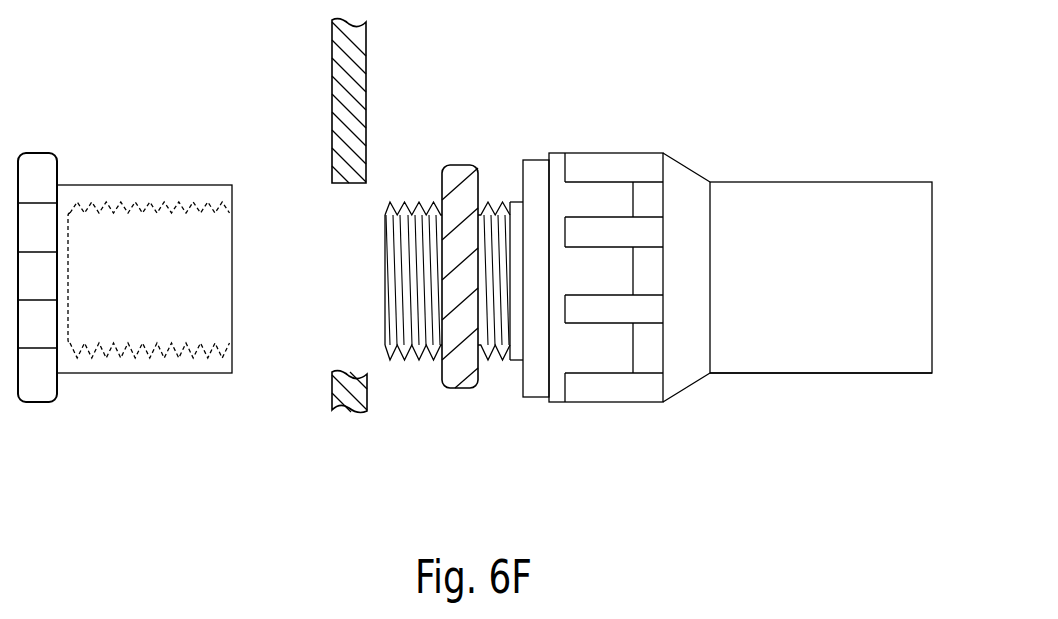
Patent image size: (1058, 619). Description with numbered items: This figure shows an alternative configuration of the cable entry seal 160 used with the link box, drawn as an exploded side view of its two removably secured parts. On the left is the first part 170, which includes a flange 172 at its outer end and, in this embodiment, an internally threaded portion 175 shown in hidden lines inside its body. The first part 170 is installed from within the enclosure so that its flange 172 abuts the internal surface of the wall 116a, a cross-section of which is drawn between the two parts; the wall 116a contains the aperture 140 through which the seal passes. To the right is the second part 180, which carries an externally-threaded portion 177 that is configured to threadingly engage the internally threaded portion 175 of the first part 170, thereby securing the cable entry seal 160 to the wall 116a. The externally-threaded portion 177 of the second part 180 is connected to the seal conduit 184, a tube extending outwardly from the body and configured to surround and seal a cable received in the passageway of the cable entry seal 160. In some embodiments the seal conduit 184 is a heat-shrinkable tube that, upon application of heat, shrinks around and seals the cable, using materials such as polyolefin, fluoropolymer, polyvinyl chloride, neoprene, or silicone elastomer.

The first part 170 is at (74, 132).
The flange 172 is at (35, 402).
The internally threaded portion 175 is at (230, 322).
The aperture 140 is at (333, 184).
The wall 116a is at (368, 42).
The cable entry seal 160 is at (609, 103).
The externally-threaded portion 177 is at (493, 363).
The second part 180 is at (748, 159).
The seal conduit 184 is at (853, 373).